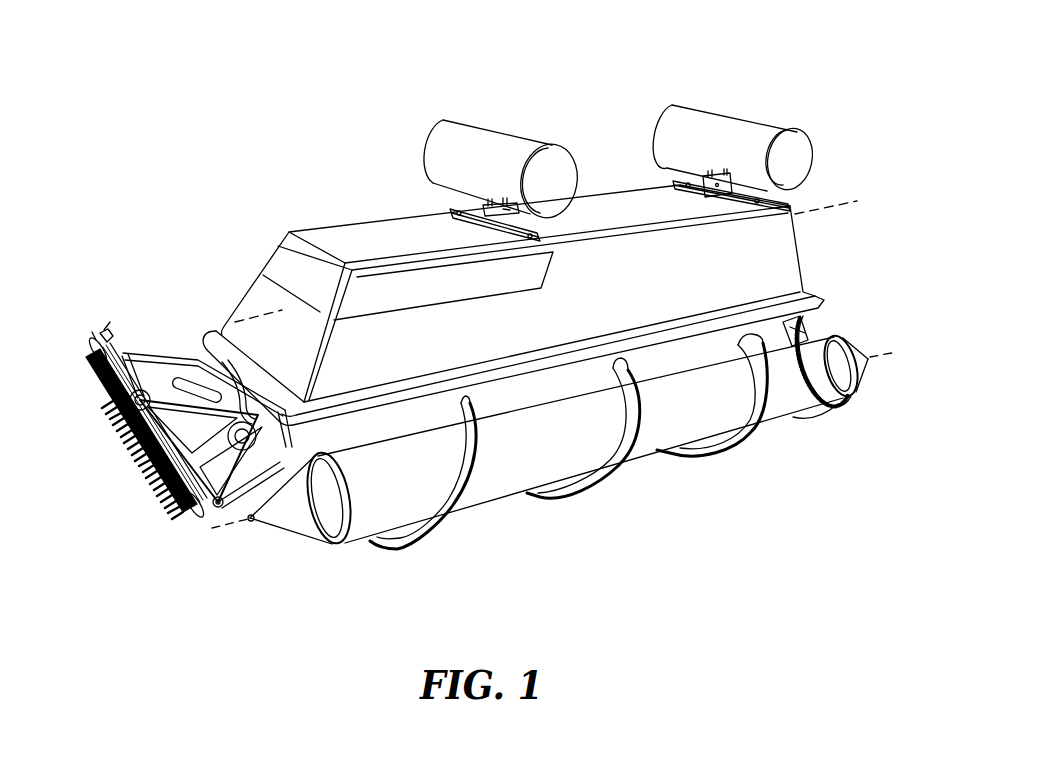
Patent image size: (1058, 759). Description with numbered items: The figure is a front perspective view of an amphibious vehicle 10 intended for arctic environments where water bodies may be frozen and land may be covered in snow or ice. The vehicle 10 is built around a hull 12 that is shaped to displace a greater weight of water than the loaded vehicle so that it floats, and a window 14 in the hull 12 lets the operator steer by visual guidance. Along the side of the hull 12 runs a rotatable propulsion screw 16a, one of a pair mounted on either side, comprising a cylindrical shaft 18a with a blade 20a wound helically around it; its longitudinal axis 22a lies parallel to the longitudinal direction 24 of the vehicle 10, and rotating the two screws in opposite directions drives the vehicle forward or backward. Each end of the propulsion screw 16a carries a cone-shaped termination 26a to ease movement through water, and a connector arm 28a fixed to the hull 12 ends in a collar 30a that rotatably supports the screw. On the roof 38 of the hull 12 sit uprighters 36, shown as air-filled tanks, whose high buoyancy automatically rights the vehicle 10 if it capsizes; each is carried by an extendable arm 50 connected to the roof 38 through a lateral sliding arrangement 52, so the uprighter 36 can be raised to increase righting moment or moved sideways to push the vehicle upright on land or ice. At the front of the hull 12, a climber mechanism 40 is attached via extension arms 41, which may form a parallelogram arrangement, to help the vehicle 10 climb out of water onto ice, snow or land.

The vehicle 10 is at (629, 64).
The hull 12 is at (784, 255).
The window 14 is at (278, 258).
The propulsion screw 16a is at (497, 506).
The shaft 18a is at (643, 457).
The blade 20a is at (732, 447).
The longitudinal axis 22a is at (230, 526).
The longitudinal direction 24 is at (858, 202).
The cone-shaped termination 26a is at (293, 537).
The connector arm 28a is at (810, 320).
The collar 30a is at (344, 538).
The uprighter 36 is at (498, 134).
The roof 38 is at (608, 210).
The climber mechanism 40 is at (101, 414).
The extension arms 41 is at (185, 362).
The extendable arm 50 is at (485, 208).
The lateral sliding arrangement 52 is at (466, 228).